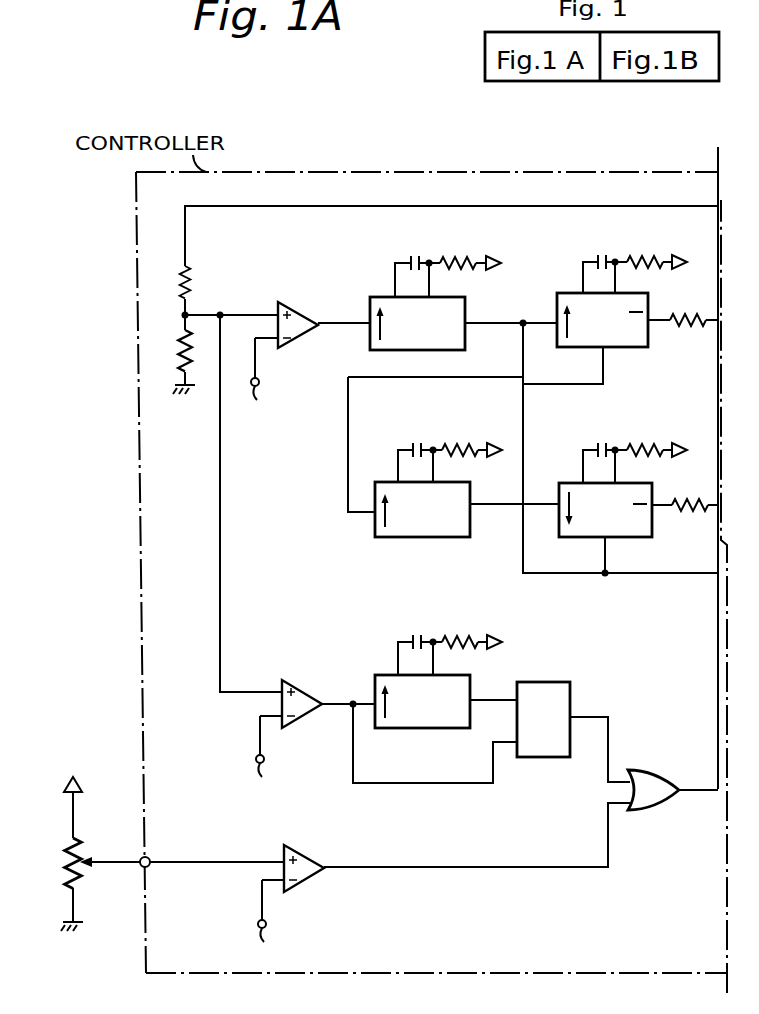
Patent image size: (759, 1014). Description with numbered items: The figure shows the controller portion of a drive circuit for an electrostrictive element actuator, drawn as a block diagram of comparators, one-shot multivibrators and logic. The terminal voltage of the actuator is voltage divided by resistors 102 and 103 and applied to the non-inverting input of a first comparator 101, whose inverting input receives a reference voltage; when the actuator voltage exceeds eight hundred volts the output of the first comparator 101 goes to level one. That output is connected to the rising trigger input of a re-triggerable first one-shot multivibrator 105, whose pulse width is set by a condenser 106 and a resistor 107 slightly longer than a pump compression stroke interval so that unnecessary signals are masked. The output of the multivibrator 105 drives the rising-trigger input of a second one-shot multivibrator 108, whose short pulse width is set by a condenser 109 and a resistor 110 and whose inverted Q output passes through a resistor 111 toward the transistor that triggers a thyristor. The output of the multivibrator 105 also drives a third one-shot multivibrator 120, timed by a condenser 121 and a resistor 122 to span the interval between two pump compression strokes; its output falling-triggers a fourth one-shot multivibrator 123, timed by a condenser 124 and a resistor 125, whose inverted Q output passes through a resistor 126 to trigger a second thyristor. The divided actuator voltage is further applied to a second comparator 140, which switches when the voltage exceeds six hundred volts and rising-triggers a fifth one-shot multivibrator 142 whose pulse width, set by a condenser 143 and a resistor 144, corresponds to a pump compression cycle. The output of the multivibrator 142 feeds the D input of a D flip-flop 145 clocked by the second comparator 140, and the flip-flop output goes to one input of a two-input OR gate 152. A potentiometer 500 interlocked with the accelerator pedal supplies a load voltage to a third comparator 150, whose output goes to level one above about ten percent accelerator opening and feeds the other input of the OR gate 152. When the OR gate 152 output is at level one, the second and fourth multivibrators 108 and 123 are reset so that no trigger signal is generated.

The first comparator 101 is at (292, 302).
The resistor 102 is at (196, 283).
The resistor 103 is at (181, 355).
The first one-shot multivibrator 105 is at (374, 296).
The condenser 106 is at (413, 255).
The resistor 107 is at (458, 255).
The second one-shot multivibrator 108 is at (560, 292).
The condenser 109 is at (593, 255).
The resistor 110 is at (637, 255).
The resistor 111 is at (687, 315).
The third one-shot multivibrator 120 is at (373, 524).
The condenser 121 is at (415, 442).
The resistor 122 is at (461, 442).
The fourth one-shot multivibrator 123 is at (567, 537).
The condenser 124 is at (605, 442).
The resistor 125 is at (652, 442).
The resistor 126 is at (691, 498).
The second comparator 140 is at (304, 681).
The fifth one-shot multivibrator 142 is at (407, 728).
The condenser 143 is at (420, 636).
The resistor 144 is at (469, 636).
The D flip-flop 145 is at (553, 757).
The third comparator 150 is at (312, 882).
The 2-input OR gate 152 is at (665, 771).
The potentiometer 500 is at (84, 846).